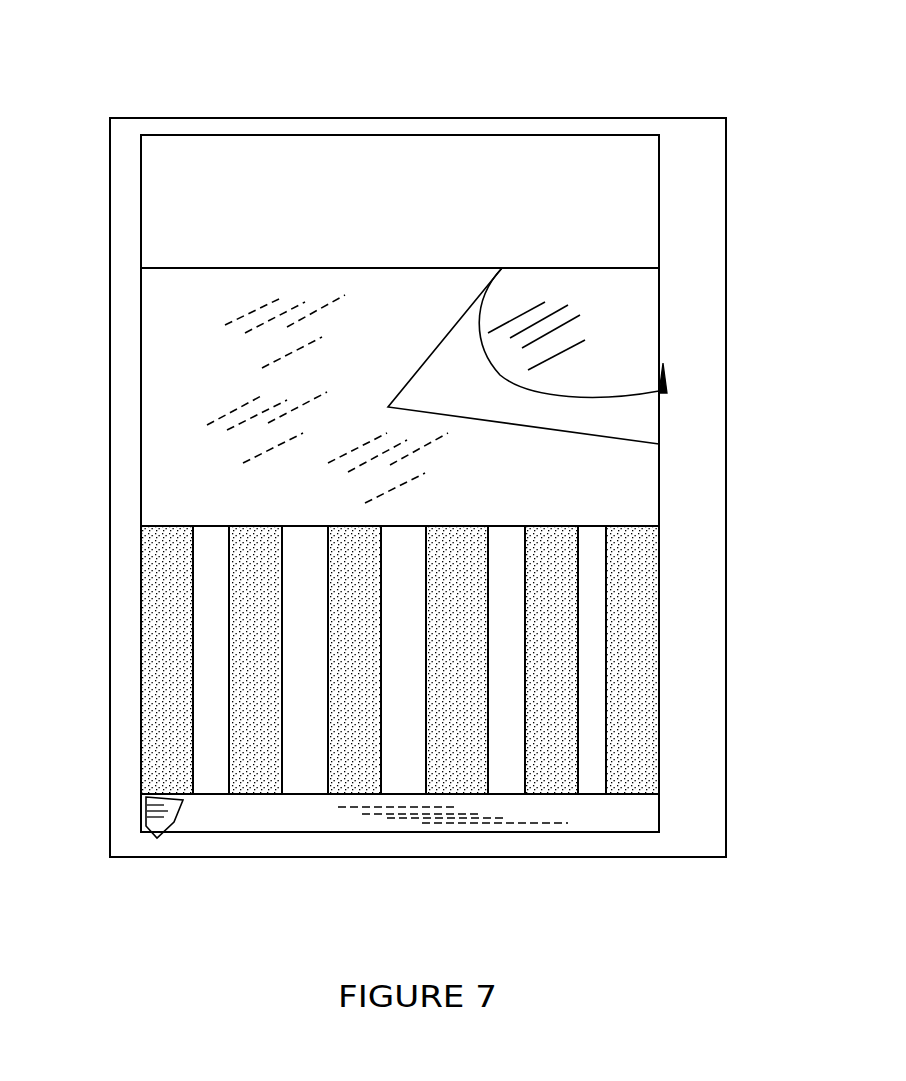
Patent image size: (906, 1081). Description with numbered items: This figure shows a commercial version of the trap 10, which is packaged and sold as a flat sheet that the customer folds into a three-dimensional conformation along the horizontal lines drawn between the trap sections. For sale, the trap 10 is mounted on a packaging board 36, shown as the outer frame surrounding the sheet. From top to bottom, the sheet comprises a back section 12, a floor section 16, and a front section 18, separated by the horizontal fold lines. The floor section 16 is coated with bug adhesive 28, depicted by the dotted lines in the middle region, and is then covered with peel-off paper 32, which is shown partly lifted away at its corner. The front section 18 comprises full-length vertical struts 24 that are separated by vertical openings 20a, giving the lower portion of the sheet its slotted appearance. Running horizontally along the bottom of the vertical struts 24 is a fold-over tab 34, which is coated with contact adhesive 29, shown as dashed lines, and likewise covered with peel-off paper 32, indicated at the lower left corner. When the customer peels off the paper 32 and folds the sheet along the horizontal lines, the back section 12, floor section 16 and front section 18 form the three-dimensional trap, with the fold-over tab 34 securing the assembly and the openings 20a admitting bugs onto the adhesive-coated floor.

The trap 10 is at (444, 38).
The back section 12 is at (173, 230).
The floor section 16 is at (173, 460).
The front section 18 is at (593, 645).
The vertical openings 20a is at (302, 777).
The vertical struts 24 is at (173, 652).
The bug adhesive 28 is at (230, 342).
The contact adhesive 29 is at (465, 813).
The peel-off paper 32 is at (645, 420).
The fold-over tab 34 is at (645, 815).
The packaging board 36 is at (693, 158).